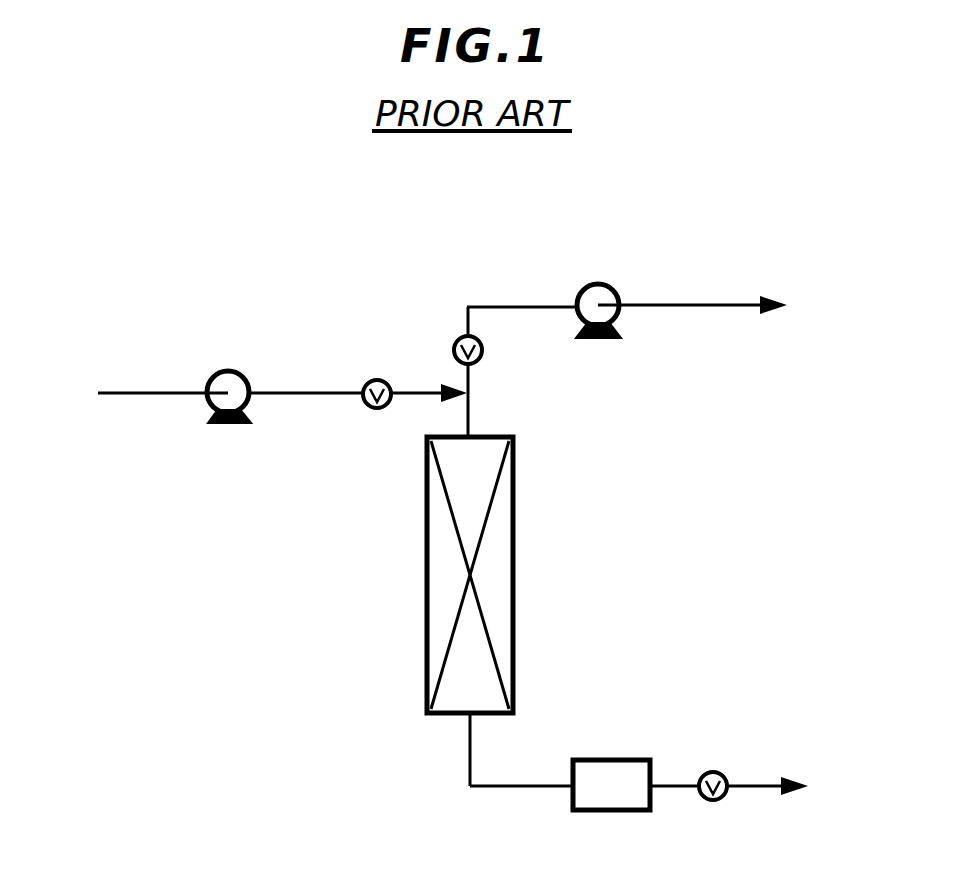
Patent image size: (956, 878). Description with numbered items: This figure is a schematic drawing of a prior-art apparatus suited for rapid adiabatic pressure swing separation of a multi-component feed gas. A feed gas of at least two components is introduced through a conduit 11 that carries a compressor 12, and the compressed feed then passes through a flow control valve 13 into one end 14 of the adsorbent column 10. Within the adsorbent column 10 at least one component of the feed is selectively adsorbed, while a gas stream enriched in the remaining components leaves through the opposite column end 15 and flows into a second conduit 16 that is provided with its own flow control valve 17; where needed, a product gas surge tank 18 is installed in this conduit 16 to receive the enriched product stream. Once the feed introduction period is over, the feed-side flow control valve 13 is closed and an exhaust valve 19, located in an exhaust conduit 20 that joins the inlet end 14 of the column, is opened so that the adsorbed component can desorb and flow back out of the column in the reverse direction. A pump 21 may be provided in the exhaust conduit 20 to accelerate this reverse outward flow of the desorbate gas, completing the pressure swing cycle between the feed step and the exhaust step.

The adsorbent column 10 is at (513, 582).
The conduit 11 is at (123, 393).
The compressor 12 is at (238, 370).
The flow control valve 13 is at (368, 382).
The end 14 is at (510, 456).
The column end 15 is at (500, 700).
The conduit 16 is at (469, 773).
The flow control valve 17 is at (711, 771).
The product gas surge tank 18 is at (611, 760).
The exhaust valve 19 is at (456, 345).
The exhaust conduit 20 is at (530, 306).
The pump 21 is at (610, 286).